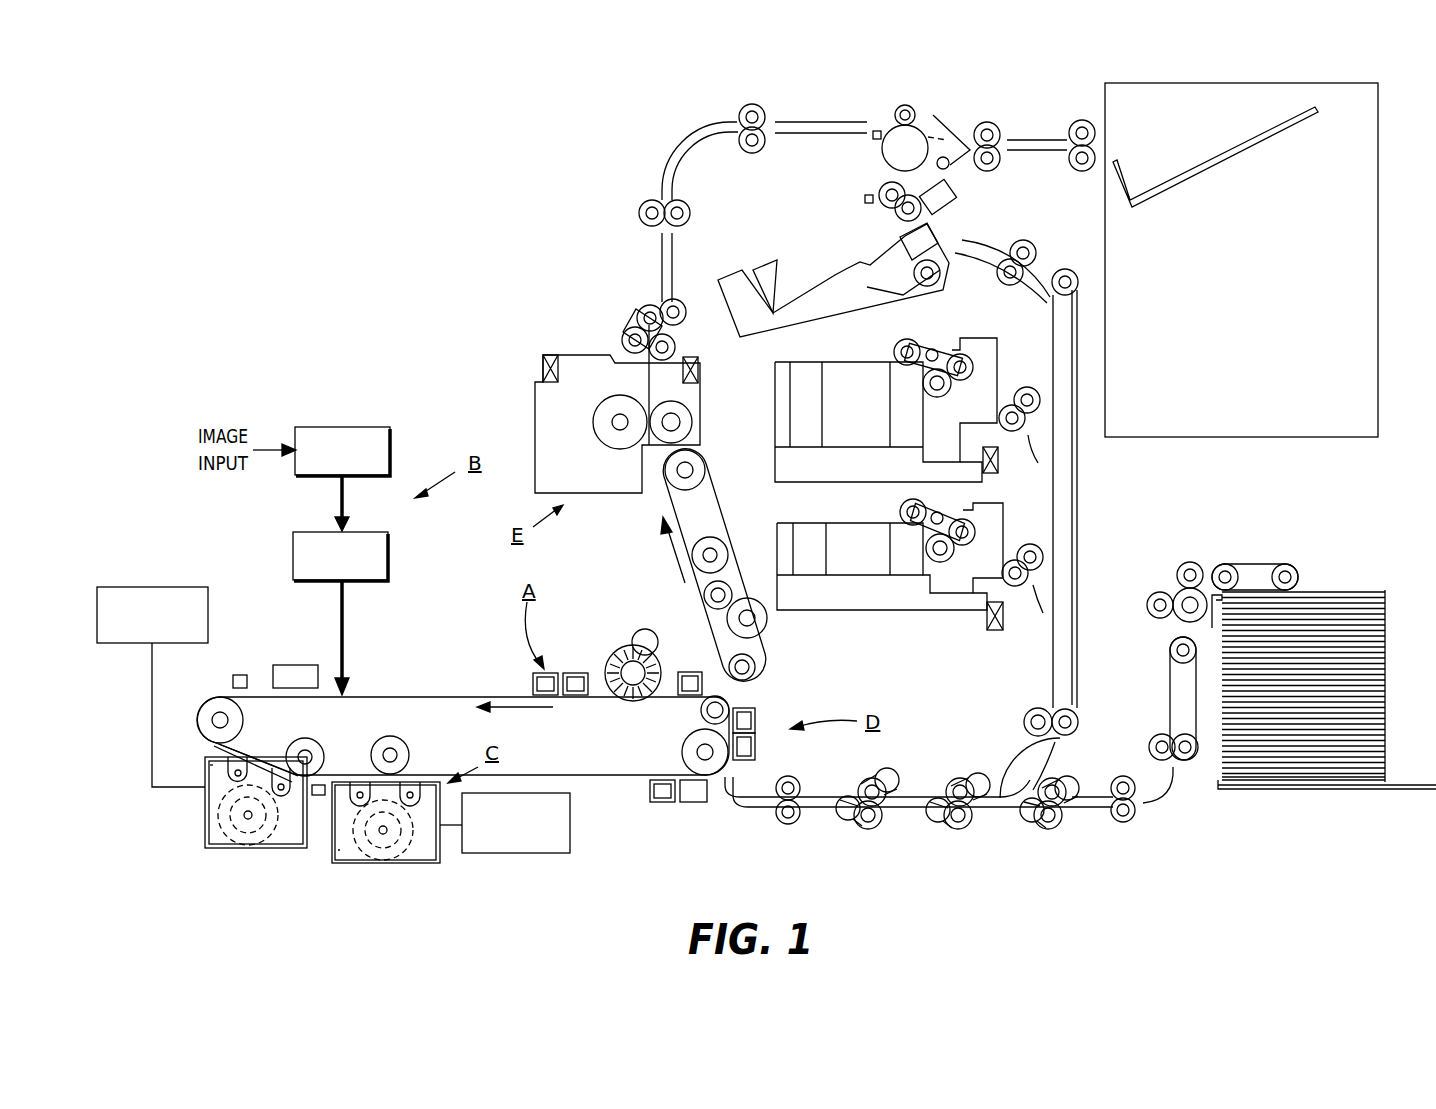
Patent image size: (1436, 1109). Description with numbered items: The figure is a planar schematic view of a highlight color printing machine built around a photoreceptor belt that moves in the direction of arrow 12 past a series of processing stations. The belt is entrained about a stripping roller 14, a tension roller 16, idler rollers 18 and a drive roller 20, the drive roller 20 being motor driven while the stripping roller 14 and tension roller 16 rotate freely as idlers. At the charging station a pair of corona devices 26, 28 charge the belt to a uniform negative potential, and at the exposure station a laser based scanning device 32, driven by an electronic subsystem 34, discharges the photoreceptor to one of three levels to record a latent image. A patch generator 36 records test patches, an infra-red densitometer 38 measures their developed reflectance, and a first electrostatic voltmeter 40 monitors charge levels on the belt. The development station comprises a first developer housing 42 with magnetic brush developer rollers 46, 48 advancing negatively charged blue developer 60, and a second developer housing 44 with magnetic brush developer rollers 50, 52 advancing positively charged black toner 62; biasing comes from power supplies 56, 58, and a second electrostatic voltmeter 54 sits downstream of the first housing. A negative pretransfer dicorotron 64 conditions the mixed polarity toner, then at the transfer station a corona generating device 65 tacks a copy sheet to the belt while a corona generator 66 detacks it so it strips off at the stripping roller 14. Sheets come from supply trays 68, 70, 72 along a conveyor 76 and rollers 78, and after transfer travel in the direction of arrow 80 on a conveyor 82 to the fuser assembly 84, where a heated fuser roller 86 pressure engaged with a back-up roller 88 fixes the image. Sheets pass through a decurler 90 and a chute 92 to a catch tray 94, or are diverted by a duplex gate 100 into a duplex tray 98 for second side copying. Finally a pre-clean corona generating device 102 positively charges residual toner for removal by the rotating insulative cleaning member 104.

The arrow 12 is at (463, 736).
The stripping roller 14 is at (690, 711).
The tension roller 16 is at (210, 702).
The idler rollers 18 is at (347, 740).
The drive roller 20 is at (679, 752).
The corona device 26 is at (525, 664).
The corona device 28 is at (569, 653).
The laser based scanning device 32 is at (359, 570).
The electronic subsystem 34 is at (362, 442).
The patch generator 36 is at (291, 658).
The infra-red densitometer 38 is at (696, 817).
The first electrostatic voltmeter 40 is at (235, 656).
The first developer housing 42 is at (231, 802).
The second developer housing 44 is at (410, 834).
The magnetic brush developer roller 46 is at (230, 757).
The magnetic brush developer roller 48 is at (259, 753).
The magnetic brush developer roller 50 is at (355, 769).
The magnetic brush developer roller 52 is at (425, 769).
The second electrostatic voltmeter 54 is at (313, 830).
The power supply 56 is at (152, 664).
The power supply 58 is at (505, 841).
The blue conductive magnetic brush developer 60 is at (210, 825).
The black toner 62 is at (339, 873).
The negative pretransfer dicorotron 64 is at (659, 817).
The corona generating device 65 is at (776, 752).
The corona generator 66 is at (777, 709).
The supply tray 68 is at (886, 430).
The supply tray 70 is at (890, 577).
The supply tray 72 is at (1327, 713).
The conveyor 76 is at (949, 795).
The rollers 78 is at (985, 816).
The arrow 80 is at (651, 550).
The conveyor 82 is at (715, 565).
The fuser assembly 84 is at (617, 409).
The heated fuser roller 86 is at (596, 427).
The back-up roller 88 is at (701, 419).
The decurler 90 is at (614, 306).
The chute 92 is at (753, 203).
The catch tray 94 is at (1241, 260).
The duplex tray 98 is at (833, 280).
The duplex gate 100 is at (932, 124).
The pre-clean corona generating device 102 is at (745, 674).
The cleaning member 104 is at (624, 646).